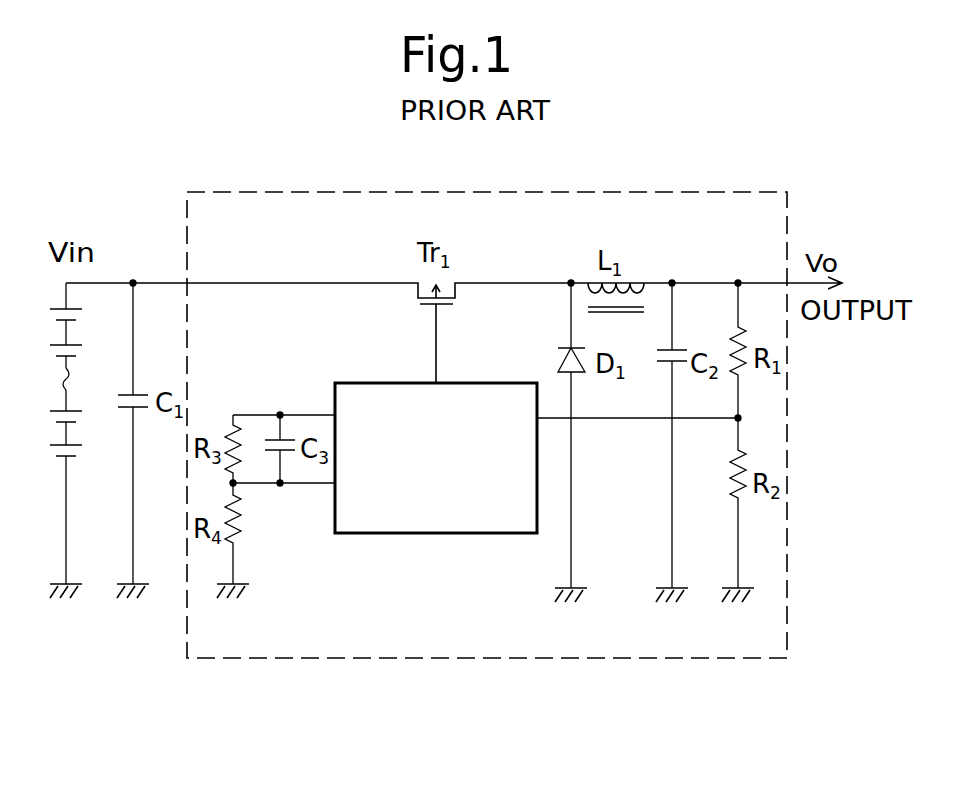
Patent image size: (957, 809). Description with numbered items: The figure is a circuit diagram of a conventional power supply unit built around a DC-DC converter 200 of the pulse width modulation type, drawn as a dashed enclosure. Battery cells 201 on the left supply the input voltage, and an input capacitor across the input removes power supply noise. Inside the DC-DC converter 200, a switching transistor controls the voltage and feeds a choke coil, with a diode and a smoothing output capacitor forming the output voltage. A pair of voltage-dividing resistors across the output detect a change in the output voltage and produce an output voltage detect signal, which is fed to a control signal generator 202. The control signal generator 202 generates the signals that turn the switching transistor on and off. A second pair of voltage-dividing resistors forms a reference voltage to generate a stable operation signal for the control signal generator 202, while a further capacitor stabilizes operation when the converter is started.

The DC-DC converter 200 is at (252, 190).
The battery cells 201 is at (78, 355).
The control signal generator 202 is at (470, 383).